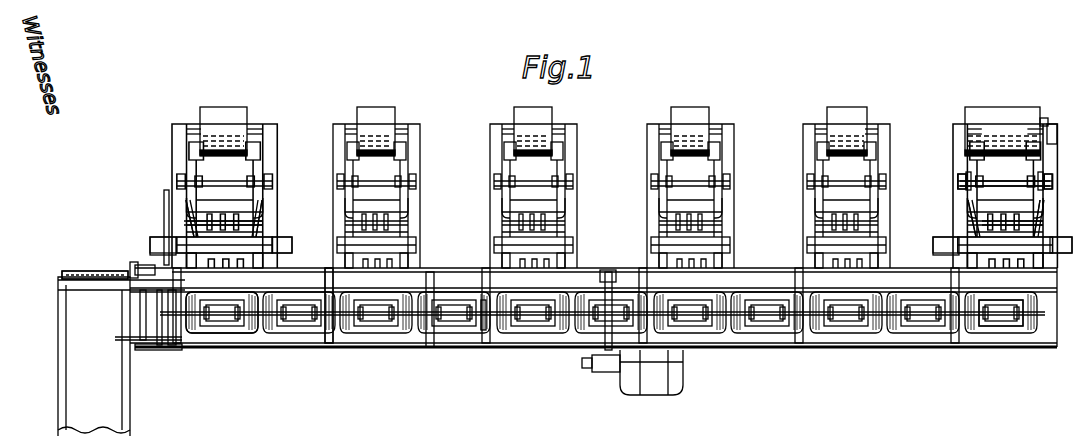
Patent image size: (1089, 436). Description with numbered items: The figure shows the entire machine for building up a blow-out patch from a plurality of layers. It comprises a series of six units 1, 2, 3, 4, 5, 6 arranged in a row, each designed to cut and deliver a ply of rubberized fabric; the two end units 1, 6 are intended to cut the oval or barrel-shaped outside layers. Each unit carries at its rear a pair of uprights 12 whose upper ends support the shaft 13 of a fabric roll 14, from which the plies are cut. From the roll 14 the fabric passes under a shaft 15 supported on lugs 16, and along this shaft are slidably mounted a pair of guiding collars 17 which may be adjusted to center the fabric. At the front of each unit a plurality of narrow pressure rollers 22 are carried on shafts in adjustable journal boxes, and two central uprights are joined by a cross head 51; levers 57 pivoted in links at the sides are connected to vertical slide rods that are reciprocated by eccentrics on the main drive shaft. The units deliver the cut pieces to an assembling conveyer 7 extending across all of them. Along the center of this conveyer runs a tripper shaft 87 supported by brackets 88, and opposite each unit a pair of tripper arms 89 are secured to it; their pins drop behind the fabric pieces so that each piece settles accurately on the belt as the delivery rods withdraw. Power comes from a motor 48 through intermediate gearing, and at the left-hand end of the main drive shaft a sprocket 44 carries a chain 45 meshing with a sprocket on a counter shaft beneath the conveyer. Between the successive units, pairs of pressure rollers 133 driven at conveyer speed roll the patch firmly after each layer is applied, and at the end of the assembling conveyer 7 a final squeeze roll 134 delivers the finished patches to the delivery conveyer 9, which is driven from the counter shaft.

The unit 1 is at (1046, 160).
The unit 2 is at (892, 162).
The unit 3 is at (733, 162).
The unit 4 is at (577, 162).
The unit 5 is at (420, 161).
The unit 6 is at (277, 158).
The assembling conveyer 7 is at (1052, 300).
The delivery conveyer 9 is at (118, 390).
The uprights 12 is at (1058, 133).
The shaft 13 is at (1044, 121).
The fabric roll 14 is at (1030, 100).
The shaft 15 is at (1016, 178).
The lugs 16 is at (956, 180).
The guiding collars 17 is at (963, 173).
The pressure rollers 22 is at (220, 295).
The sprocket 44 is at (136, 263).
The chain 45 is at (129, 279).
The motor 48 is at (648, 387).
The cross head 51 is at (290, 245).
The levers 57 is at (167, 218).
The tripper shaft 87 is at (483, 320).
The brackets 88 is at (431, 350).
The tripper arms 89 is at (1001, 312).
The pressure rollers 133 is at (338, 348).
The final squeeze roll 134 is at (245, 383).